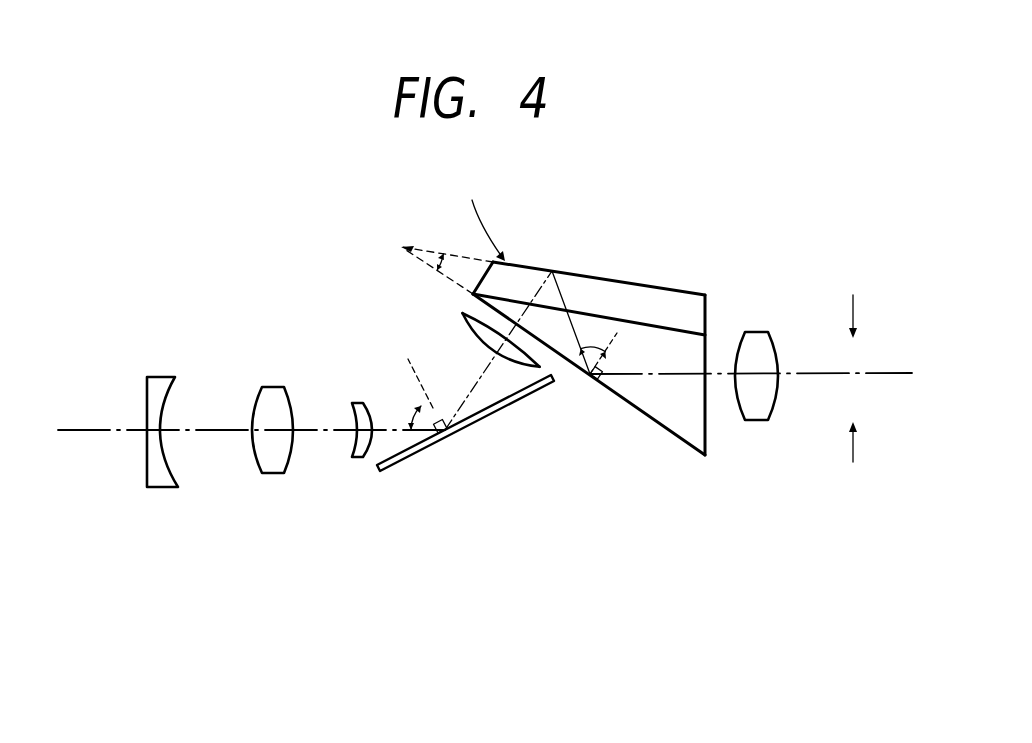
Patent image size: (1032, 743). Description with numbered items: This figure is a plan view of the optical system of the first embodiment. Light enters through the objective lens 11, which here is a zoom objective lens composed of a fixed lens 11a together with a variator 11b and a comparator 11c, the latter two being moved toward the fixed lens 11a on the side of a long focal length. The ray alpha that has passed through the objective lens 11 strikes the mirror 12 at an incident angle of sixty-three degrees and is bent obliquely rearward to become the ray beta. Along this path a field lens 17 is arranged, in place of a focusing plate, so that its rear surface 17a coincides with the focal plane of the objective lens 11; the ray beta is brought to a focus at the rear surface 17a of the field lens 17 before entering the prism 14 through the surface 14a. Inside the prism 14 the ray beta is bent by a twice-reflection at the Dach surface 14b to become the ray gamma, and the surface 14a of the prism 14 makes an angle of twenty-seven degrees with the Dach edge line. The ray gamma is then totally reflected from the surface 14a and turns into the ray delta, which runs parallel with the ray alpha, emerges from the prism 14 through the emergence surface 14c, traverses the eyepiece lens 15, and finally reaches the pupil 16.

The objective lens 11 is at (143, 360).
The fixed lens 11a is at (163, 488).
The variator 11b is at (273, 474).
The comparator 11c is at (355, 458).
The mirror 12 is at (422, 449).
The prism 14 is at (572, 323).
The surface of the prism 14a is at (656, 423).
The Dach surface 14b is at (520, 278).
The emergence surface 14c is at (706, 306).
The eyepiece lens 15 is at (755, 421).
The pupil 16 is at (855, 312).
The field lens 17 is at (462, 324).
The rear surface of the field lens 17a is at (469, 312).